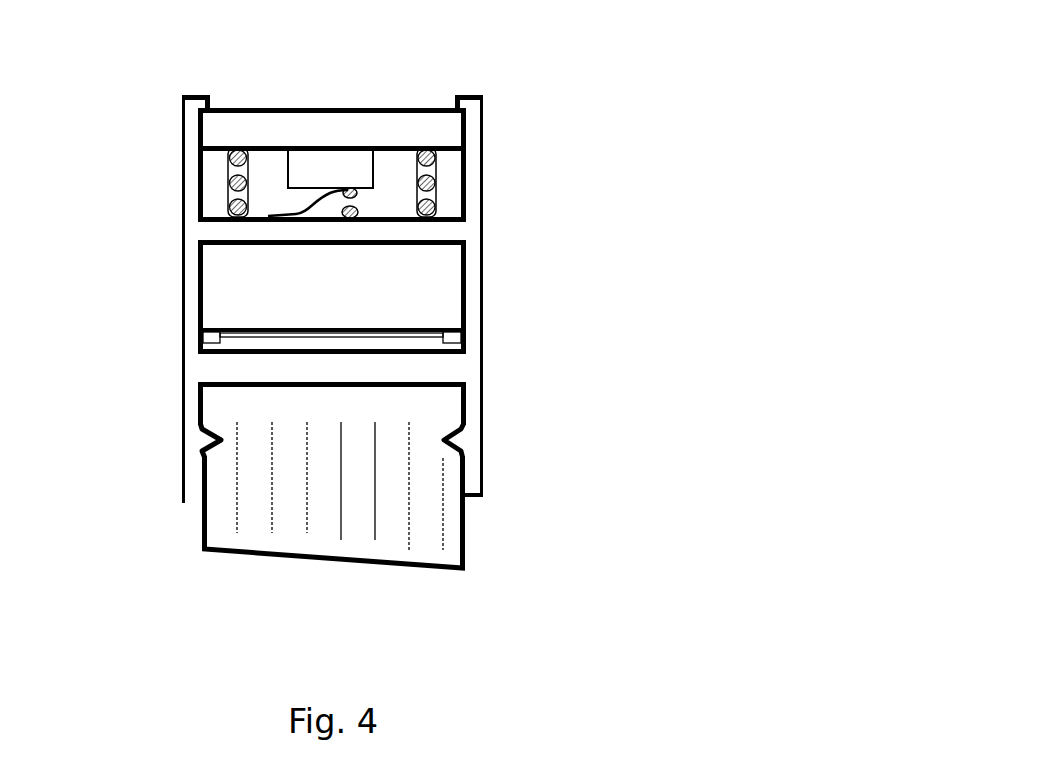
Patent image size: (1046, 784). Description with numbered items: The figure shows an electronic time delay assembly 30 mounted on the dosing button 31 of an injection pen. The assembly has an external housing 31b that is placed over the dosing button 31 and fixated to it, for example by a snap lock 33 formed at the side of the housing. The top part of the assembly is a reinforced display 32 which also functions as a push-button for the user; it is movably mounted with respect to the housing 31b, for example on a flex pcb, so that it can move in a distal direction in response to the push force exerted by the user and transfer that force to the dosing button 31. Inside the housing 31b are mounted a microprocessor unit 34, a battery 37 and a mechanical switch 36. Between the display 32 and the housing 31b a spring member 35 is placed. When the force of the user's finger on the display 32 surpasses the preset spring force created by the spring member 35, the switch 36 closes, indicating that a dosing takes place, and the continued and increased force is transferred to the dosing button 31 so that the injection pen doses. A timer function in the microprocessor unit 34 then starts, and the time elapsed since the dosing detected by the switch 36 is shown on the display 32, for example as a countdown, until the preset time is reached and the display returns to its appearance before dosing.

The electronic time delay assembly 30 is at (640, 76).
The dosing button 31 is at (307, 475).
The external housing 31b is at (190, 362).
The reinforced display 32 is at (385, 108).
The snap lock 33 is at (458, 440).
The microprocessor unit 34 is at (438, 277).
The spring member 35 is at (433, 180).
The mechanical switch 36 is at (307, 197).
The battery 37 is at (423, 335).